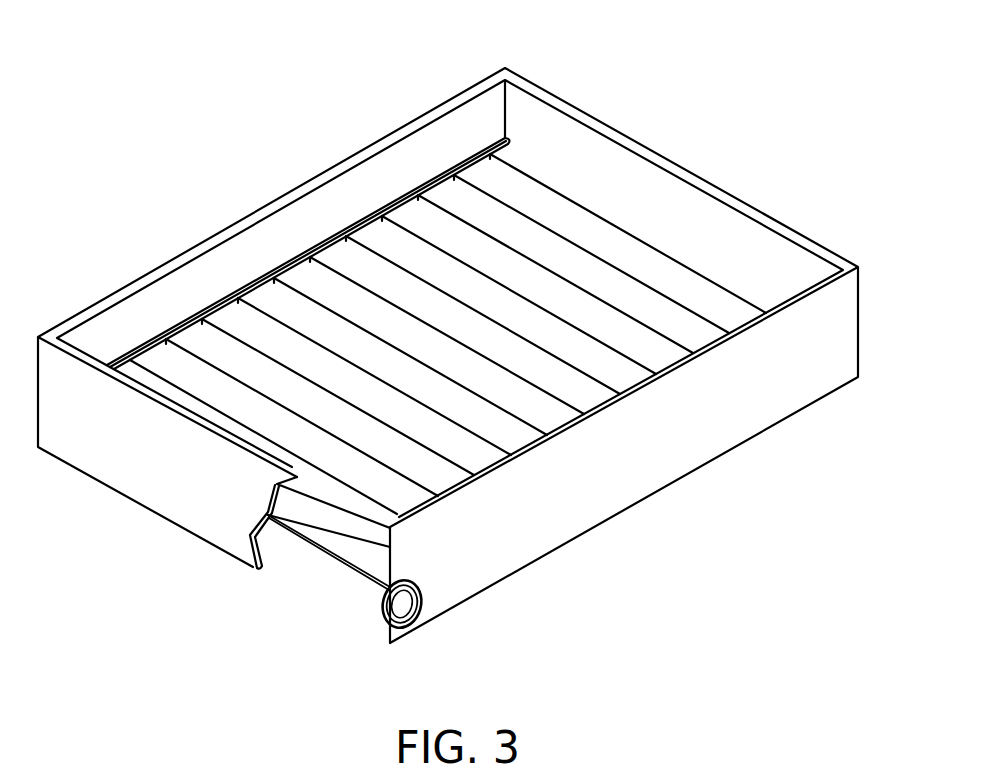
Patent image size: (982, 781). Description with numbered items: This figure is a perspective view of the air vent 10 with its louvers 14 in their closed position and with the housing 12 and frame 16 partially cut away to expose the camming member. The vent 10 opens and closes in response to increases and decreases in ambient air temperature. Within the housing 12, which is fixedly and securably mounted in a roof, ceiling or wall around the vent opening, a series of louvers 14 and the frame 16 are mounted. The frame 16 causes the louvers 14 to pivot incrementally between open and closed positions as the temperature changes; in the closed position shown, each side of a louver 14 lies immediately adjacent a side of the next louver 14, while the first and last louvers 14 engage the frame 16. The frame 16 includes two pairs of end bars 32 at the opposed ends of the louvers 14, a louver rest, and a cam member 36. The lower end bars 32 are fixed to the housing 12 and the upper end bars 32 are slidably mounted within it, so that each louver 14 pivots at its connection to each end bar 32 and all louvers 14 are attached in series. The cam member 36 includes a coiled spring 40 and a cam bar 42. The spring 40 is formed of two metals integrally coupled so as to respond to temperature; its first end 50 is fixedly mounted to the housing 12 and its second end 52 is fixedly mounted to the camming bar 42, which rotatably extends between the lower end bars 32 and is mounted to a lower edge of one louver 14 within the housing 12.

The air vent 10 is at (690, 111).
The housing 12 is at (229, 227).
The louvers 14 is at (685, 288).
The frame 16 is at (372, 212).
The end bars 32 is at (213, 303).
The cam member 36 is at (301, 580).
The spring 40 is at (412, 620).
The cam bar 42 is at (298, 537).
The first end 50 is at (398, 582).
The second end 52 is at (390, 625).